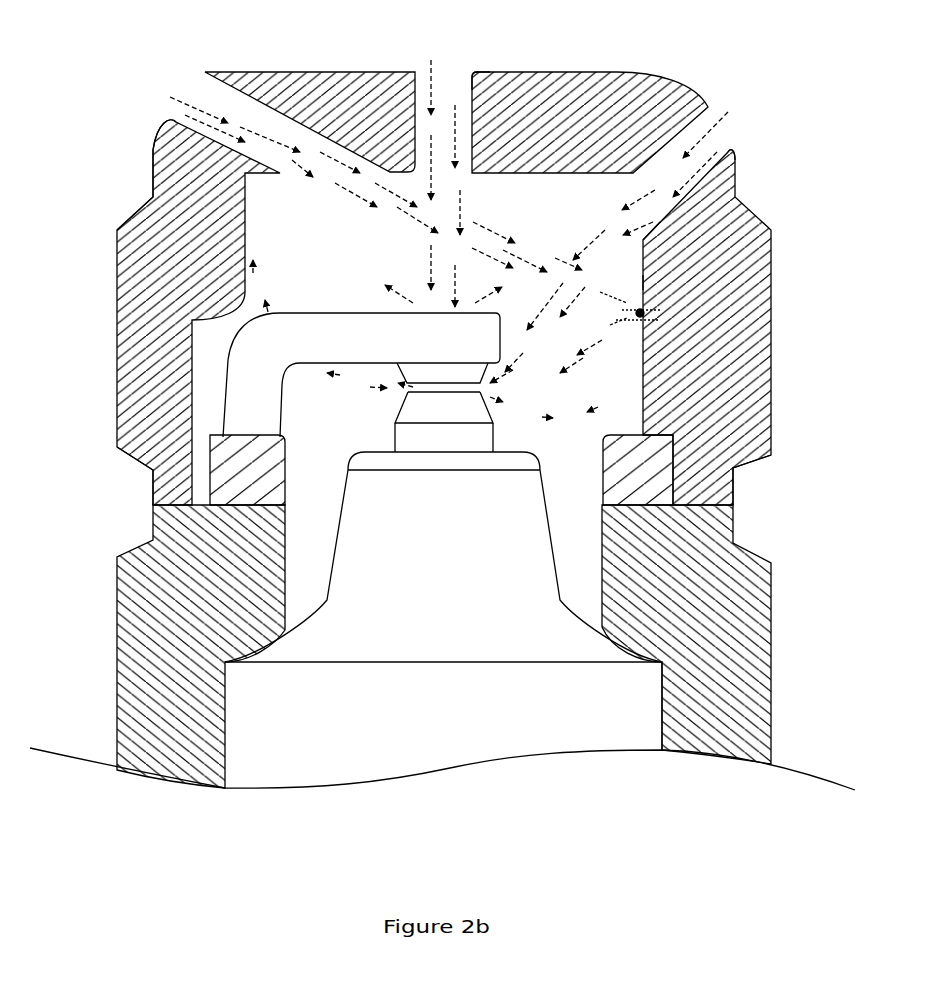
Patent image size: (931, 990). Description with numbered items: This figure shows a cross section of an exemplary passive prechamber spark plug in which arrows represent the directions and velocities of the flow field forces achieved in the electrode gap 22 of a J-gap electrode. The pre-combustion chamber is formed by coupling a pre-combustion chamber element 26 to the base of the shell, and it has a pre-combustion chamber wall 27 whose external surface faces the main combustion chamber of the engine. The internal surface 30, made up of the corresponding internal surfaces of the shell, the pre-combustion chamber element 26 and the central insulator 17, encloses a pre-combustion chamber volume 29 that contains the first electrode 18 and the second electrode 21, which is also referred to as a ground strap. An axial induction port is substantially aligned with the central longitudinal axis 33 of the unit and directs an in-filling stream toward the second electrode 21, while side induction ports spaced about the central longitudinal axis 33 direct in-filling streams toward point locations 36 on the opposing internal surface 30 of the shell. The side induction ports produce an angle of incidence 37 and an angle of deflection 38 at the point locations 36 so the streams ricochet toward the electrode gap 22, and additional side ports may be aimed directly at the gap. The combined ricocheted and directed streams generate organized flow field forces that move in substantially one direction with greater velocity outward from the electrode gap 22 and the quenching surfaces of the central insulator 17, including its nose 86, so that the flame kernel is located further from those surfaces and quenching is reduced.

The pre-combustion chamber element 26 is at (118, 208).
The pre-combustion chamber wall 27 is at (167, 193).
The second electrode 21 is at (335, 342).
The electrode gap 22 is at (398, 384).
The first electrode 18 is at (395, 418).
The nose 86 is at (140, 462).
The central insulator 17 is at (335, 540).
The internal surface 30 is at (645, 398).
The pre-combustion chamber volume 29 is at (643, 355).
The angle of incidence 37 is at (643, 240).
The point location 36 is at (648, 282).
The angle of deflection 38 is at (648, 312).
The central longitudinal axis 33 is at (442, 783).